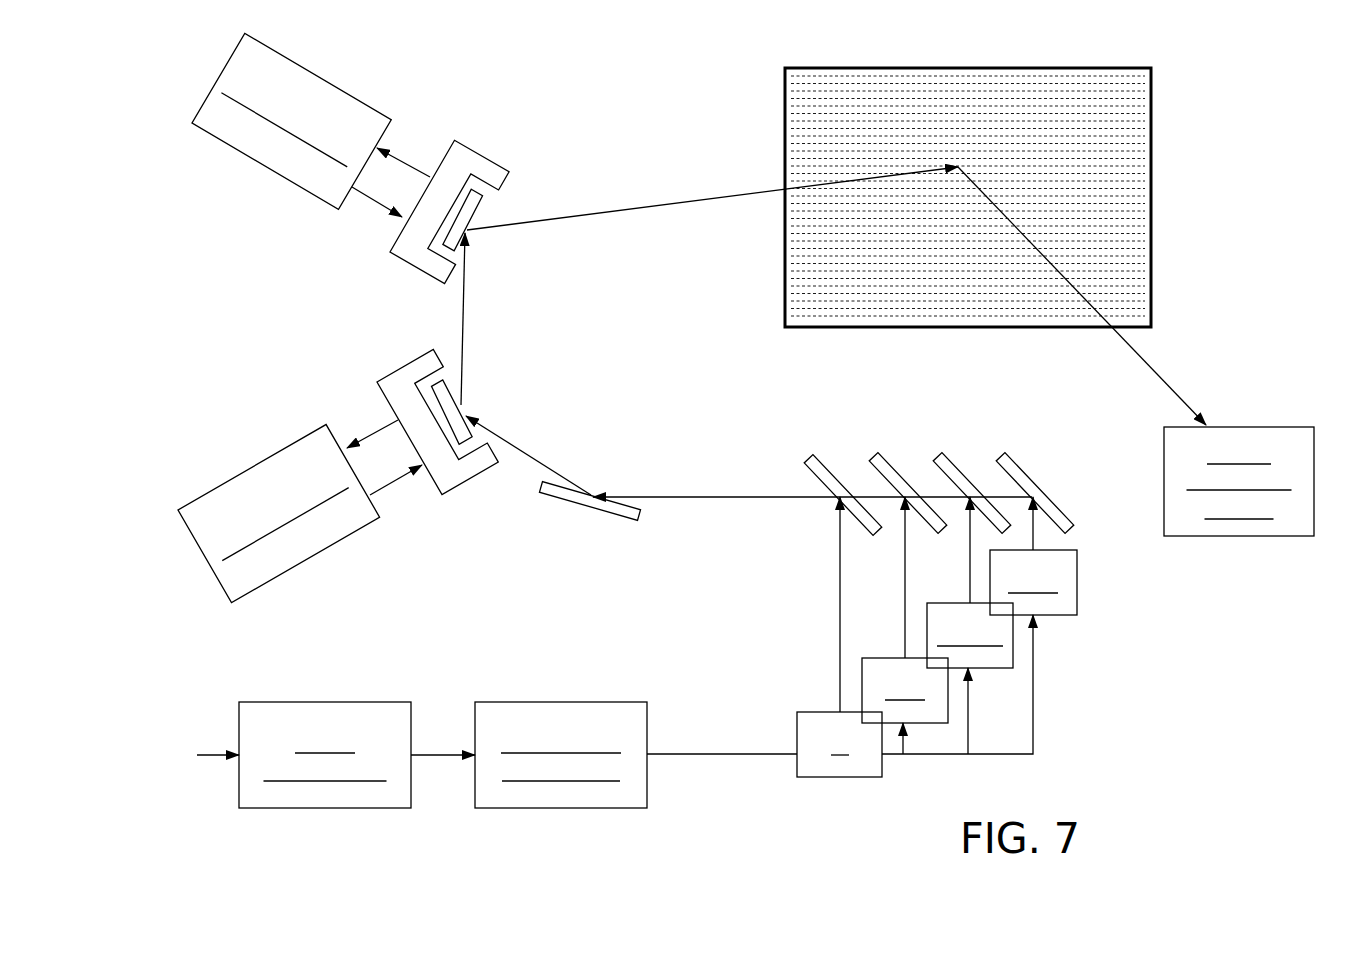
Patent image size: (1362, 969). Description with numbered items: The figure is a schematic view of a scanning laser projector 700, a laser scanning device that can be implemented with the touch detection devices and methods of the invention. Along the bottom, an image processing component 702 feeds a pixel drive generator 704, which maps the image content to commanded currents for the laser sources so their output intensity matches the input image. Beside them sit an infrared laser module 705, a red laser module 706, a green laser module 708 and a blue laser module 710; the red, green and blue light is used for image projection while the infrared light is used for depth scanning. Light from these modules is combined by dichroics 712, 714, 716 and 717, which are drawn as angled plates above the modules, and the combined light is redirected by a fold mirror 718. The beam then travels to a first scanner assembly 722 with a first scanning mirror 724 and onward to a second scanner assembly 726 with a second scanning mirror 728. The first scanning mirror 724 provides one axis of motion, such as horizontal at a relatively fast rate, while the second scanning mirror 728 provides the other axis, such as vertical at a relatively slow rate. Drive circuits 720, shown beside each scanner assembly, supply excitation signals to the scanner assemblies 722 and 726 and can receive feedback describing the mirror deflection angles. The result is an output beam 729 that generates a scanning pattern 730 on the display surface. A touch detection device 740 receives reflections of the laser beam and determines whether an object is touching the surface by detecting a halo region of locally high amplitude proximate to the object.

The scanning laser projector 700 is at (247, 838).
The image processing component 702 is at (303, 808).
The pixel drive generator 704 is at (540, 808).
The infrared laser module 705 is at (797, 712).
The red laser module 706 is at (862, 659).
The green laser module 708 is at (997, 669).
The blue laser module 710 is at (1077, 582).
The dichroic 712 is at (1017, 461).
The dichroic 714 is at (953, 461).
The dichroic 716 is at (889, 461).
The dichroic 717 is at (827, 461).
The fold mirror 718 is at (605, 515).
The drive circuits 720 is at (192, 118).
The first scanner assembly 722 is at (377, 381).
The first scanning mirror 724 is at (458, 407).
The second scanner assembly 726 is at (390, 251).
The second scanning mirror 728 is at (475, 202).
The output beam 729 is at (650, 205).
The scanning pattern 730 is at (1156, 302).
The touch detection device 740 is at (1283, 423).